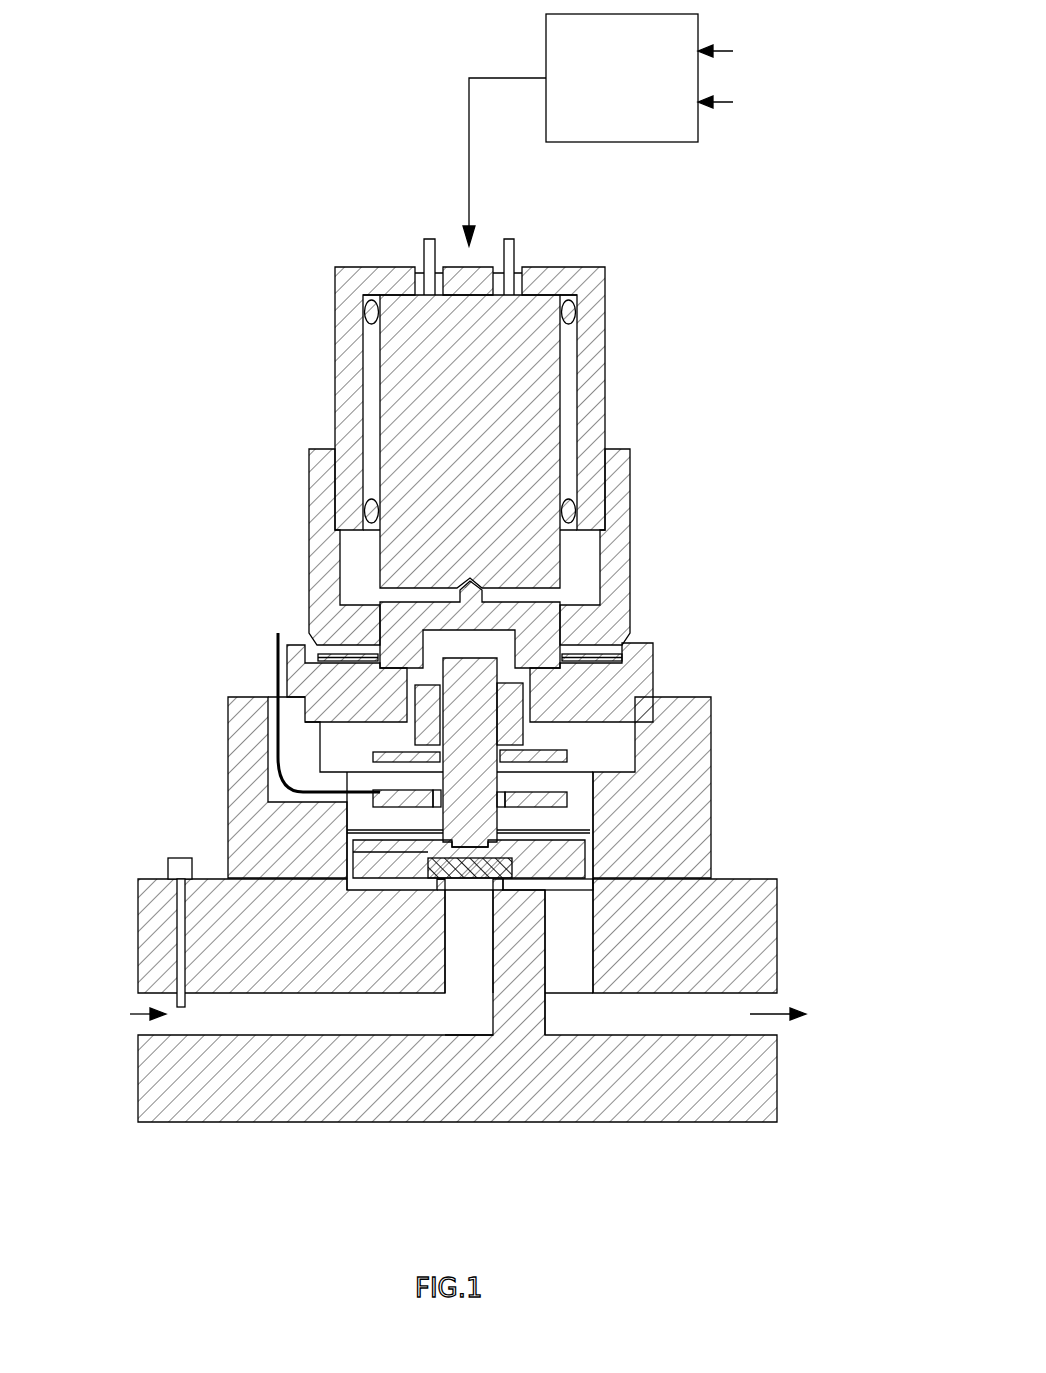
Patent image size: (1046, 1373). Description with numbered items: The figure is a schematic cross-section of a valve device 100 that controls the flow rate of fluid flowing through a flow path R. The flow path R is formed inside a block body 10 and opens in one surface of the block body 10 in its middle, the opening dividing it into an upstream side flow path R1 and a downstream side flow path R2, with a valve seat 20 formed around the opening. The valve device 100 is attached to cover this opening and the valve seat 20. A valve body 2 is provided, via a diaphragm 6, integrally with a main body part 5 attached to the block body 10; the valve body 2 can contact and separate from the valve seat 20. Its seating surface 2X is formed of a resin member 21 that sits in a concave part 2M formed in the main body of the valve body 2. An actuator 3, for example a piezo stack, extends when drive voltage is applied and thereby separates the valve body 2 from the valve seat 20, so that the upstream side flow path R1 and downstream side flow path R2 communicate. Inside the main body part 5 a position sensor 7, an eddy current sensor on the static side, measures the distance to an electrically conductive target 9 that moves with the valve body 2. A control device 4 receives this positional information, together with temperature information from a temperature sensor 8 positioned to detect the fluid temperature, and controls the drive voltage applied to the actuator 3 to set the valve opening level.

The valve device 100 is at (284, 134).
The control device 4 is at (611, 143).
The actuator 3 is at (380, 392).
The electrically conductive target 9 is at (388, 747).
The position sensor 7 is at (387, 797).
The main body part 5 is at (712, 710).
The diaphragm 6 is at (570, 830).
The resin member 21 is at (513, 867).
The concave part 2M is at (427, 863).
The valve body 2 is at (355, 862).
The seating surface 2X is at (477, 880).
The valve seat 20 is at (507, 885).
The block body 10 is at (355, 1123).
The upstream side flow path R1 is at (427, 1016).
The downstream side flow path R2 is at (575, 1017).
The flow path R is at (575, 1175).
The temperature sensor 8 is at (178, 931).